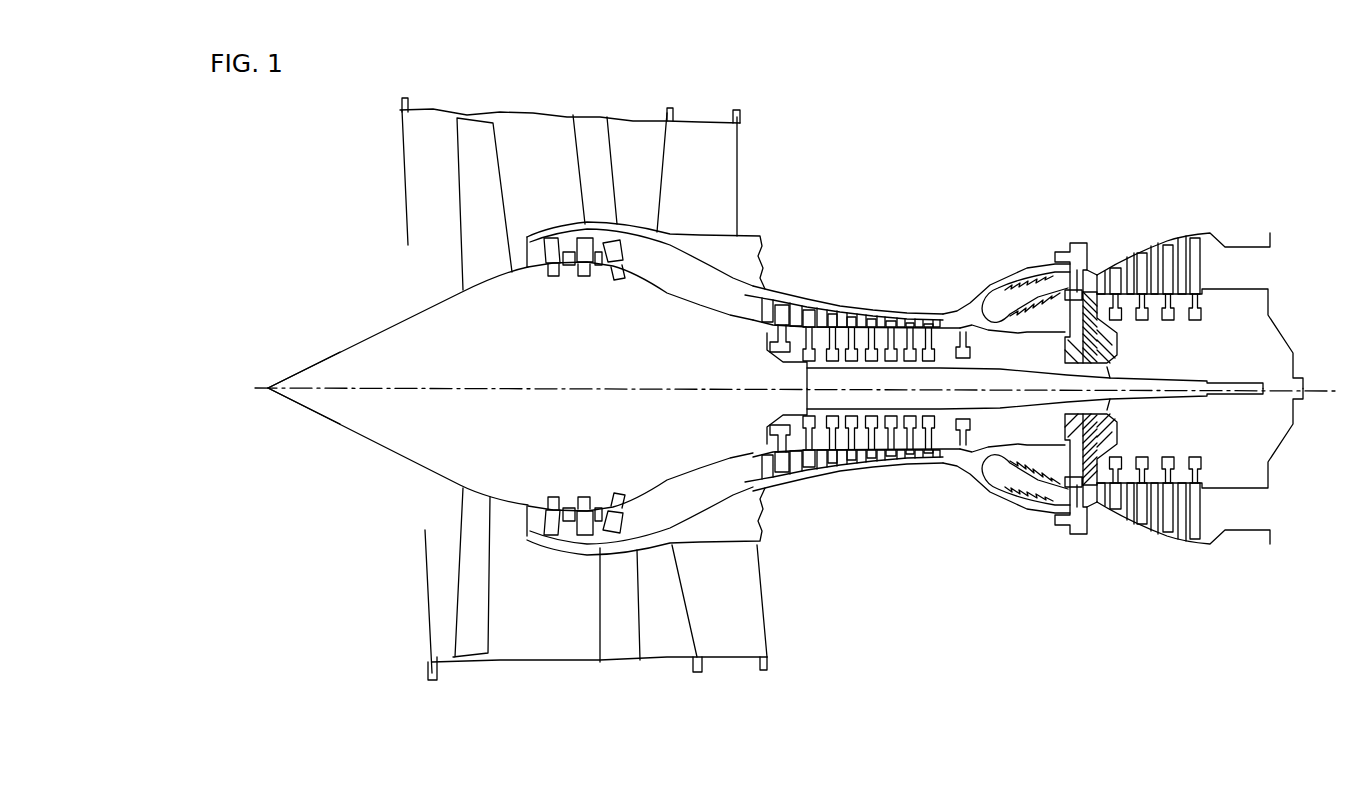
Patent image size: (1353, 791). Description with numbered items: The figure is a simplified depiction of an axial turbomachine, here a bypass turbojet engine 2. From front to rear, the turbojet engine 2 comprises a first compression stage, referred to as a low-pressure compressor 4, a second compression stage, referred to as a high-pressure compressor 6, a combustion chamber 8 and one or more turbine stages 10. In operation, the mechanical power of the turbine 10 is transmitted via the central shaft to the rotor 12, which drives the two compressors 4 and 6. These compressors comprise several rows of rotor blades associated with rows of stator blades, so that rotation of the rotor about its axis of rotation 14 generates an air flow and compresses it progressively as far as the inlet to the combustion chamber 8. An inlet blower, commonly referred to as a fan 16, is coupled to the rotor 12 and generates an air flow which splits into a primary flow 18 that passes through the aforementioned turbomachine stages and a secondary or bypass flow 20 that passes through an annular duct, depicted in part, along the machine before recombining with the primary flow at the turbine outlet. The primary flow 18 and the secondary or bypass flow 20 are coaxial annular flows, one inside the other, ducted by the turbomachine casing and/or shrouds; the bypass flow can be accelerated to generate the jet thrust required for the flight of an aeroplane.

The turbojet engine 2 is at (1010, 143).
The low-pressure compressor 4 is at (545, 272).
The high-pressure compressor 6 is at (820, 313).
The combustion chamber 8 is at (997, 307).
The turbine stages 10 is at (1178, 273).
The rotor 12 is at (367, 423).
The axis of rotation 14 is at (588, 393).
The fan 16 is at (480, 195).
The primary flow 18 is at (643, 257).
The secondary or bypass flow 20 is at (750, 160).